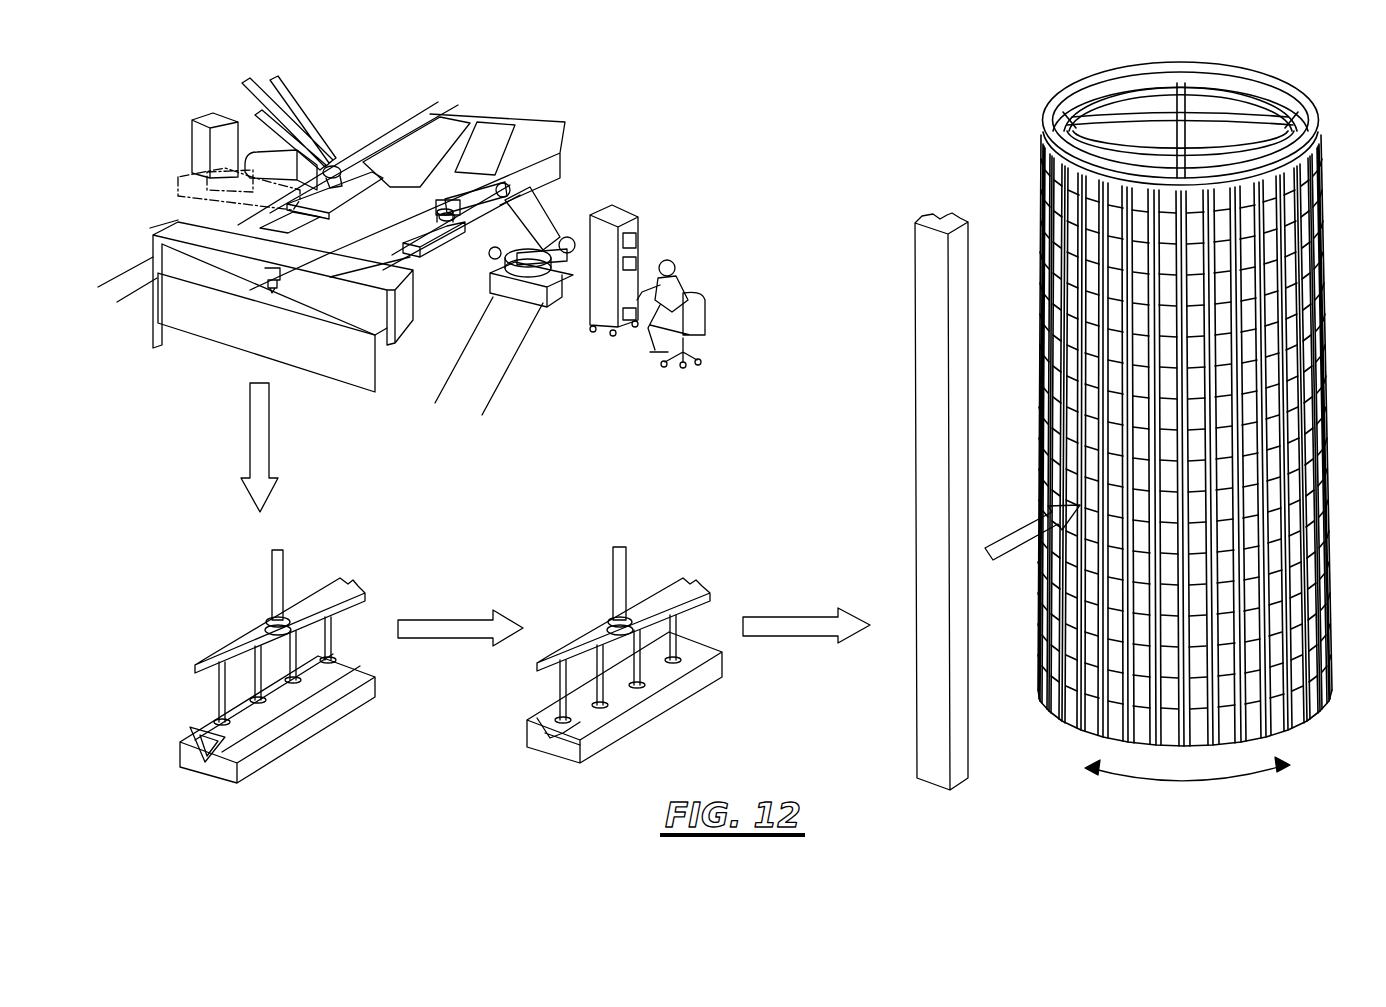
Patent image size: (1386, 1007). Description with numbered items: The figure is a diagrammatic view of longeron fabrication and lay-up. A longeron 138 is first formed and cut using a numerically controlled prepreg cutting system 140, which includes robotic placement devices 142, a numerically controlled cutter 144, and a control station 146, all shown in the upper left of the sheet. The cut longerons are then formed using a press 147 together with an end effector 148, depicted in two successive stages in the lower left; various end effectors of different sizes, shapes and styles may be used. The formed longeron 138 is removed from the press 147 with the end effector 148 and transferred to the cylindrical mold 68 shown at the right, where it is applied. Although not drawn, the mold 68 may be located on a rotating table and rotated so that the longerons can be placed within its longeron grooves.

The mold 68 is at (1293, 90).
The longeron 138 is at (915, 412).
The numerically controlled prepreg cutting system 140 is at (648, 158).
The robotic placement devices 142 is at (288, 98).
The numerically controlled cutter 144 is at (403, 322).
The control station 146 is at (633, 208).
The press 147 is at (220, 648).
The end effector 148 is at (267, 597).